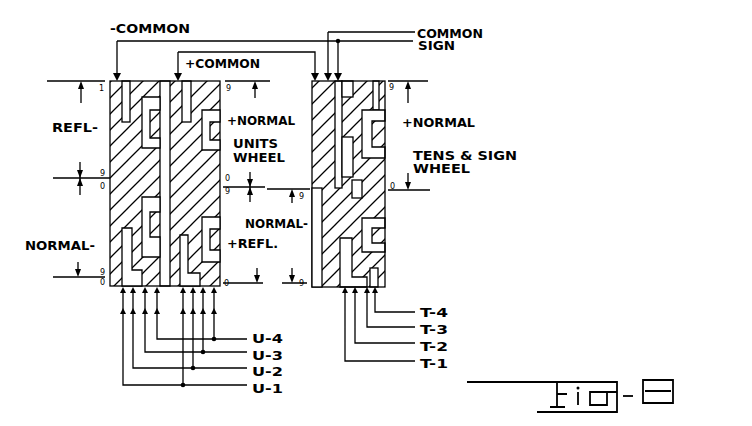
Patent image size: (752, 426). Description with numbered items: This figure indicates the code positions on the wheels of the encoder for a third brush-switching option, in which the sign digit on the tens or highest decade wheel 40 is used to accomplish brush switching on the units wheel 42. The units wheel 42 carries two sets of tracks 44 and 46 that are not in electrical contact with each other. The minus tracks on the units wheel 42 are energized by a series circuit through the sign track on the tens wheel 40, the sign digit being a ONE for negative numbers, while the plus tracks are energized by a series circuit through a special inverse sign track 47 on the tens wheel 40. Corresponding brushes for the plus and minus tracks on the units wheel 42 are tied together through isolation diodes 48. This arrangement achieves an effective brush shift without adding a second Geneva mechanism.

The tens or highest decade wheel 40 is at (388, 155).
The units wheel 42 is at (105, 205).
The set of tracks 44 is at (108, 213).
The set of tracks 46 is at (219, 214).
The inverse sign track 47 is at (314, 243).
The isolation diodes 48 is at (115, 312).